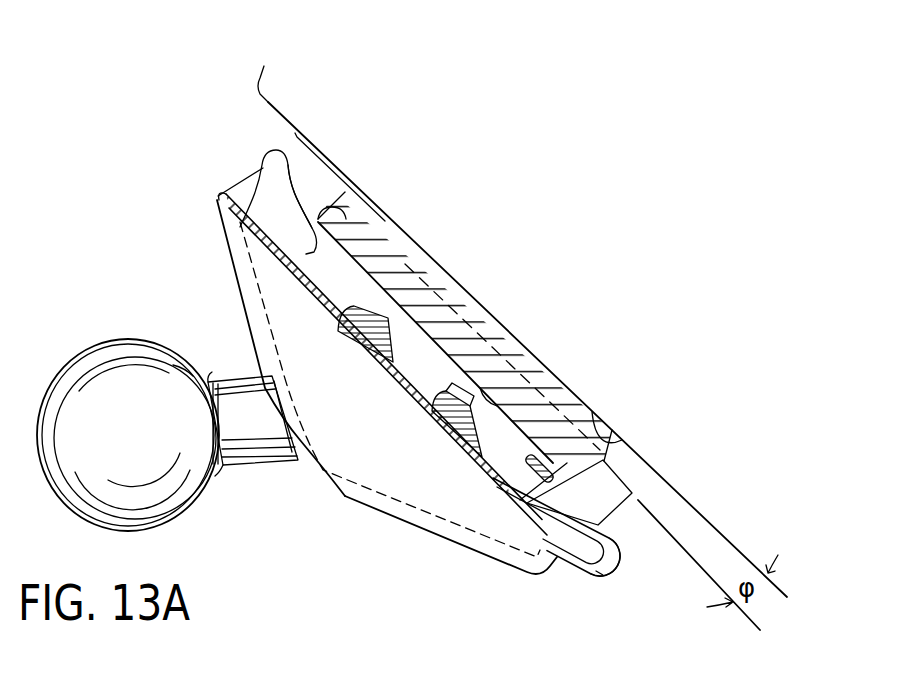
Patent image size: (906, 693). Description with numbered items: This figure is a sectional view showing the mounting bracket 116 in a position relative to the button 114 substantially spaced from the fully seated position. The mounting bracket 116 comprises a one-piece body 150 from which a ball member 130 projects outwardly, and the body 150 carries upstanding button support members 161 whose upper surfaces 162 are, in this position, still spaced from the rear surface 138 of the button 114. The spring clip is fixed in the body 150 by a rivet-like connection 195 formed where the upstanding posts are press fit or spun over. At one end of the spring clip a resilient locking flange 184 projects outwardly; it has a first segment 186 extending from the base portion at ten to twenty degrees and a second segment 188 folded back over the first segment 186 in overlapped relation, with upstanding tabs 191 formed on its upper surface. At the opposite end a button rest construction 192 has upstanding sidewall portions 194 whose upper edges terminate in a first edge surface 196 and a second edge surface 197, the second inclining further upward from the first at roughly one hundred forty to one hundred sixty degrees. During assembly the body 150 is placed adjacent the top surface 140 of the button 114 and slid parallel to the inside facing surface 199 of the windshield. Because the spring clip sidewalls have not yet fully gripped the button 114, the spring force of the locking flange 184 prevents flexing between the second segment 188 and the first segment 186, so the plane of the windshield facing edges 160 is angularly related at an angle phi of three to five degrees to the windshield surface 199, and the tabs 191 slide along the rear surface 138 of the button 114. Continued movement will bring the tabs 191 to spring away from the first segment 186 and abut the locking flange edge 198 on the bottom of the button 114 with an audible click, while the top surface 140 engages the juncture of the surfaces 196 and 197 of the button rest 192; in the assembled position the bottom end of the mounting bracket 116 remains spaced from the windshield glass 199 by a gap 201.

The button 114 is at (462, 330).
The mounting bracket 116 is at (393, 518).
The ball member 130 is at (168, 500).
The rear surface of the button 138 is at (473, 407).
The top surface (top end) of the button 140 is at (298, 178).
The body 150 is at (332, 482).
The windshield facing edges 160 is at (638, 458).
The upstanding button support members 161 is at (372, 340).
The surfaces on the button support members 162 is at (442, 277).
The locking flange 184 is at (610, 589).
The first segment 186 is at (577, 562).
The second segment 188 is at (621, 537).
The upstanding tabs 191 is at (556, 462).
The button rest construction 192 is at (265, 220).
The upstanding sidewall portions 194 is at (257, 230).
The rivet-like connection 195 is at (403, 380).
The first edge surface 196 is at (342, 209).
The second edge surface 197 is at (285, 163).
The locking flange edge 198 is at (625, 448).
The inside facing surface of the windshield 199 is at (268, 102).
The gap 201 is at (640, 478).